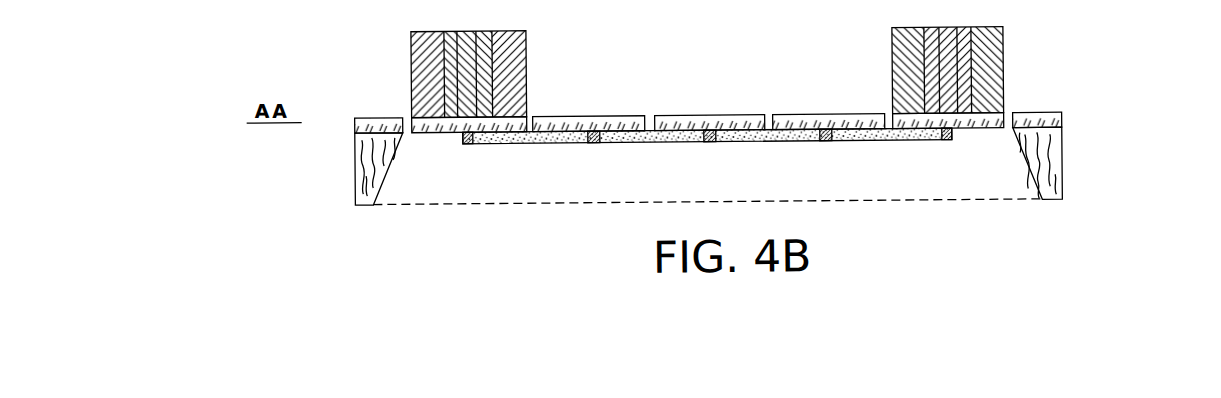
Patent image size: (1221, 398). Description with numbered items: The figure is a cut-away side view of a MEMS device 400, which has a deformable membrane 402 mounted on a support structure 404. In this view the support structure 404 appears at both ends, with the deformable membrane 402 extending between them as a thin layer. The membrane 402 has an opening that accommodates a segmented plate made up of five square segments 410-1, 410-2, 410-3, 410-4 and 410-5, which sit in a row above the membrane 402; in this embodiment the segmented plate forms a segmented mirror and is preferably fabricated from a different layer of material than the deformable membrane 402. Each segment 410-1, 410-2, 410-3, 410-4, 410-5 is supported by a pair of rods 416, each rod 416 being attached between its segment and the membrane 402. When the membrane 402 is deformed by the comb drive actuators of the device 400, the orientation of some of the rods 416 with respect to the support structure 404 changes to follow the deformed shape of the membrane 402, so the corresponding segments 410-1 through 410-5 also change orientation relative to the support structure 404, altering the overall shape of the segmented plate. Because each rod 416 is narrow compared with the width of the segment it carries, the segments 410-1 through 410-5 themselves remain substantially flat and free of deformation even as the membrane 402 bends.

The MEMS device 400 is at (1014, 0).
The deformable membrane 402 is at (640, 147).
The support structure 404 is at (1062, 134).
The first square segment 410-1 is at (426, 134).
The second square segment 410-2 is at (582, 119).
The third square segment 410-3 is at (704, 120).
The fourth square segment 410-4 is at (826, 121).
The fifth square segment 410-5 is at (977, 134).
The rods 416 is at (468, 146).